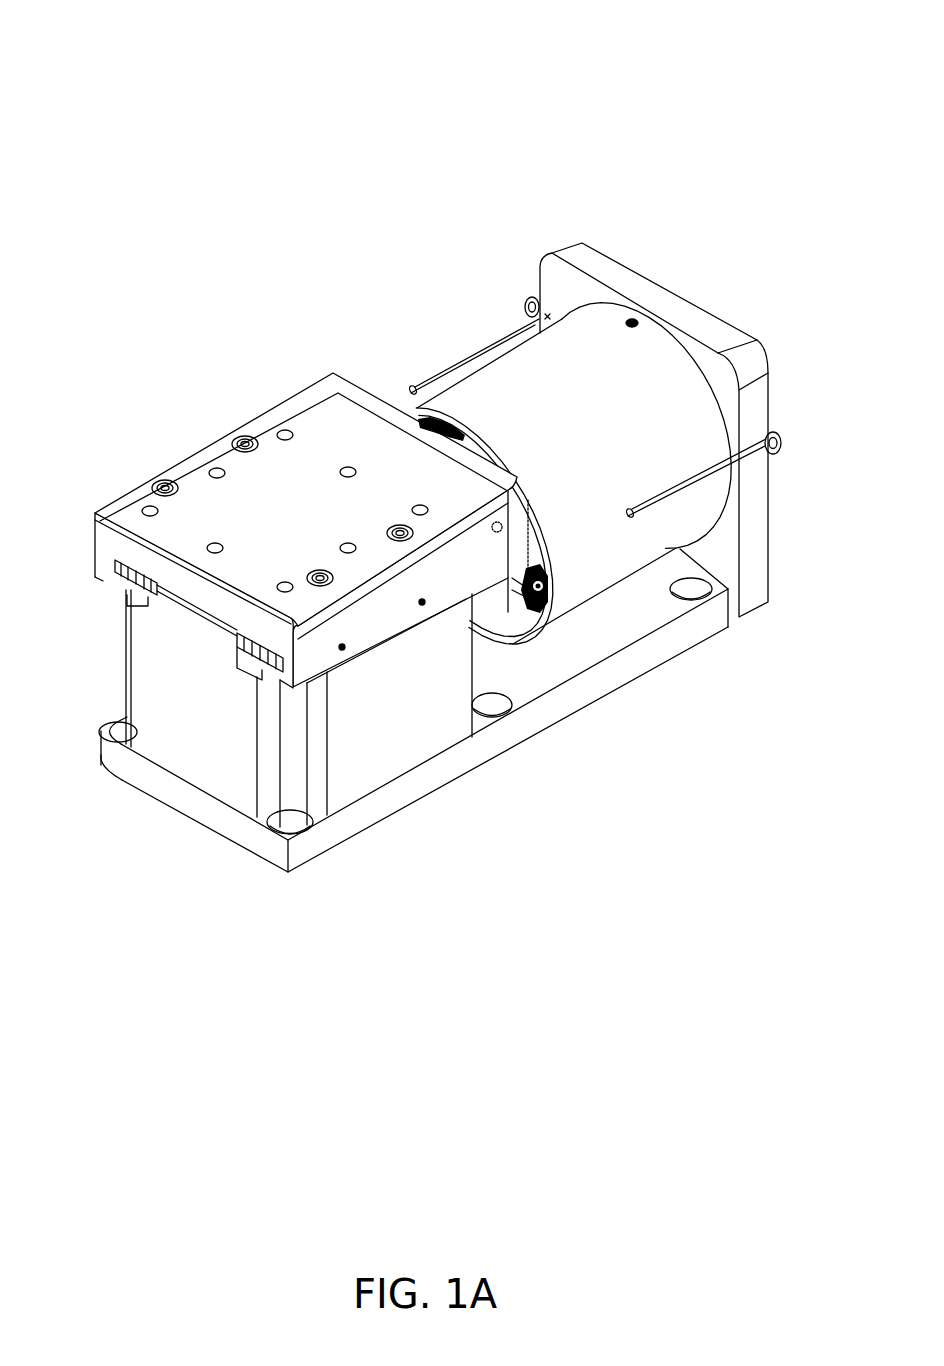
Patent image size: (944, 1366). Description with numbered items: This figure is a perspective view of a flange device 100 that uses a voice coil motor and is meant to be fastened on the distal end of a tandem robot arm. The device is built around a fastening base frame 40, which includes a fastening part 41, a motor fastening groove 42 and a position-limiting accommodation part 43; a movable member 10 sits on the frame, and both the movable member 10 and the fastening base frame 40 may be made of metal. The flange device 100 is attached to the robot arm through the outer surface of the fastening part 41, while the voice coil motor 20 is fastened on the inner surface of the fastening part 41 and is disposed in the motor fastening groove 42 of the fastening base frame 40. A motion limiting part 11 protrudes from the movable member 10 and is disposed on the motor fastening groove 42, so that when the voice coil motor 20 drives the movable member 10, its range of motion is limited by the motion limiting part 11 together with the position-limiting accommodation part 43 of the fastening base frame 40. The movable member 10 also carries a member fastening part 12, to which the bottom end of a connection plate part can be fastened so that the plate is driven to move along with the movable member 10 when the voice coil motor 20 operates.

The flange device 100 is at (350, 182).
The movable member 10 is at (254, 375).
The member fastening part 12 is at (205, 478).
The voice coil motor 20 is at (535, 385).
The motion limiting part 11 is at (514, 597).
The fastening base frame 40 is at (477, 760).
The fastening part 41 is at (670, 317).
The motor fastening groove 42 is at (627, 628).
The position-limiting accommodation part 43 is at (385, 746).